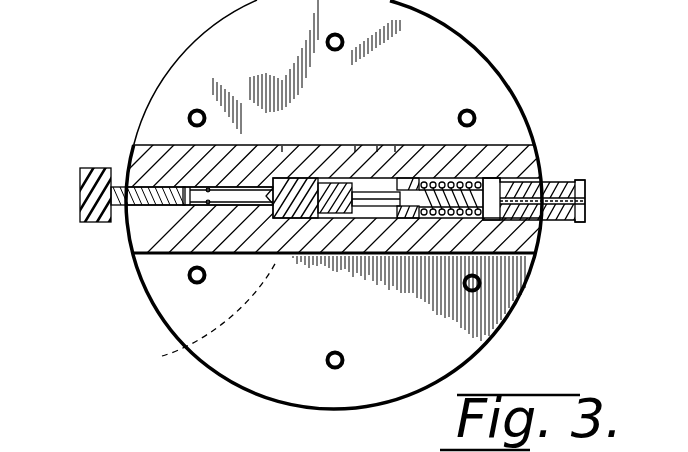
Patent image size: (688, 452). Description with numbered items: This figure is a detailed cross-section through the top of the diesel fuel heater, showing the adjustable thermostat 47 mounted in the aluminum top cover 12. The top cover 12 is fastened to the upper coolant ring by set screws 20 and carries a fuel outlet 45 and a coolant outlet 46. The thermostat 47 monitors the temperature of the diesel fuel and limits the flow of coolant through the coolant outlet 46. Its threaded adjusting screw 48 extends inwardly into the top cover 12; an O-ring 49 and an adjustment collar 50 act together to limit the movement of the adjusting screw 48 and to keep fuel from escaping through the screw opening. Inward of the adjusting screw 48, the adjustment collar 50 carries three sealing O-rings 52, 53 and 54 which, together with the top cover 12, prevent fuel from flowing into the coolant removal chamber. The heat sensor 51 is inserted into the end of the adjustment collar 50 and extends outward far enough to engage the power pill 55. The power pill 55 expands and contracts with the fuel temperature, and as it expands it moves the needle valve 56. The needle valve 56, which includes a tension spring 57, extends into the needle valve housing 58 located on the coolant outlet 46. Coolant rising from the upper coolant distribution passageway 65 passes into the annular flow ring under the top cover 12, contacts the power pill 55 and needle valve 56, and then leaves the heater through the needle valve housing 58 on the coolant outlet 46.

The top cover 12 is at (193, 83).
The set screws 20 is at (474, 283).
The fuel outlet 45 is at (205, 316).
The coolant outlet 46 is at (585, 196).
The adjustable thermostat 47 is at (76, 197).
The threaded adjusting screw 48 is at (131, 151).
The O-ring 49 is at (188, 206).
The adjustment collar 50 is at (186, 210).
The heat sensor 51 is at (282, 146).
The sealing O-ring 52 is at (355, 147).
The sealing O-ring 53 is at (377, 147).
The sealing O-ring 54 is at (395, 147).
The power pill 55 is at (360, 204).
The needle valve 56 is at (420, 147).
The tension spring 57 is at (450, 178).
The needle valve housing 58 is at (543, 180).
The upper coolant distribution passageway 65 is at (520, 174).